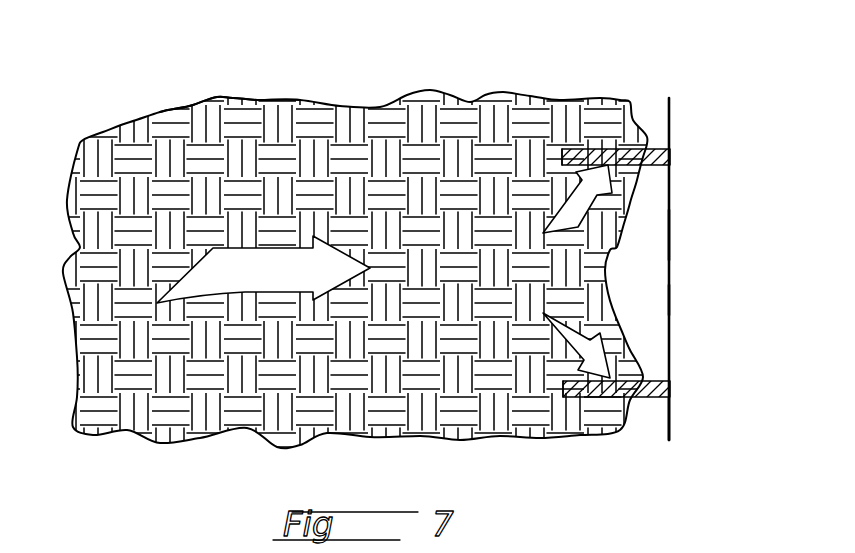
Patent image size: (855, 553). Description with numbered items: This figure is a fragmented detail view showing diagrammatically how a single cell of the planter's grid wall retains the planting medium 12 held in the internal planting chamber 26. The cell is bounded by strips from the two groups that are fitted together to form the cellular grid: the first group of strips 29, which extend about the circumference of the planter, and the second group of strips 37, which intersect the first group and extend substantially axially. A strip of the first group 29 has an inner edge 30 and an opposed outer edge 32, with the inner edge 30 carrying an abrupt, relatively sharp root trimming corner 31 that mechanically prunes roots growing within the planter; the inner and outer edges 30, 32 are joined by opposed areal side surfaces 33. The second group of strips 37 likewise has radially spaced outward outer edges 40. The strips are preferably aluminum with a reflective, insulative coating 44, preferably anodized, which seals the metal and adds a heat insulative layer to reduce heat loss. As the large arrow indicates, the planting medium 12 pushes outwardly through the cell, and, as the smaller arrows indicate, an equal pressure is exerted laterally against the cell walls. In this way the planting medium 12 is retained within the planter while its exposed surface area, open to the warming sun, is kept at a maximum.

The planting medium 12 is at (285, 118).
The internal planting chamber 26 is at (222, 98).
The first group of strips 29 is at (657, 404).
The inner edges 30 is at (565, 389).
The root trimming corners 31 is at (562, 153).
The outer edges 32 is at (672, 154).
The areal side surfaces 33 is at (667, 100).
The second group of strips 37 is at (676, 300).
The outer edges 40 is at (671, 238).
The reflective, insulative coating 44 is at (650, 379).